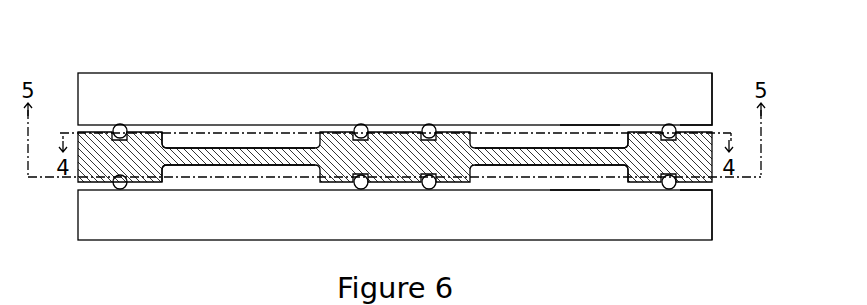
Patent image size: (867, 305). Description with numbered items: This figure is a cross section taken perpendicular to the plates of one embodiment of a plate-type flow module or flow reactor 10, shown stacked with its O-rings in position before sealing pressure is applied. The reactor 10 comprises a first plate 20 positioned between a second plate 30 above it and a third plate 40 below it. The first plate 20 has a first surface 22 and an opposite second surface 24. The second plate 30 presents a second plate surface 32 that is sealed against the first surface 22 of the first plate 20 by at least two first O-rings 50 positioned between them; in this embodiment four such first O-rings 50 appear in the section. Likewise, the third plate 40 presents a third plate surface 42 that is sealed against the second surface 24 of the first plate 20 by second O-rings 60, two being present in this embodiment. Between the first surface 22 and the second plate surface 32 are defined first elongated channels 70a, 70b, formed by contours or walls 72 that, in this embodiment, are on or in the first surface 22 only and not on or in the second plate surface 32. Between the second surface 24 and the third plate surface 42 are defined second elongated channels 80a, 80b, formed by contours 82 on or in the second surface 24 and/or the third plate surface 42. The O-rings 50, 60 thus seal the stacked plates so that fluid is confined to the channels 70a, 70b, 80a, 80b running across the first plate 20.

The plate-type flow module or flow reactor 10 is at (153, 272).
The first plate 20 is at (383, 169).
The first surface 22 is at (700, 131).
The second surface 24 is at (697, 184).
The second plate 30 is at (383, 110).
The second plate surface 32 is at (589, 124).
The third plate 40 is at (383, 224).
The third plate surface 42 is at (567, 186).
The first O-rings 50 is at (125, 126).
The second O-rings 60 is at (358, 188).
The first elongated channel 70a is at (253, 131).
The first elongated channel 70b is at (515, 131).
The contours or walls 72 is at (168, 147).
The second elongated channel 80a is at (235, 184).
The second elongated channel 80b is at (503, 186).
The contours 82 is at (624, 166).